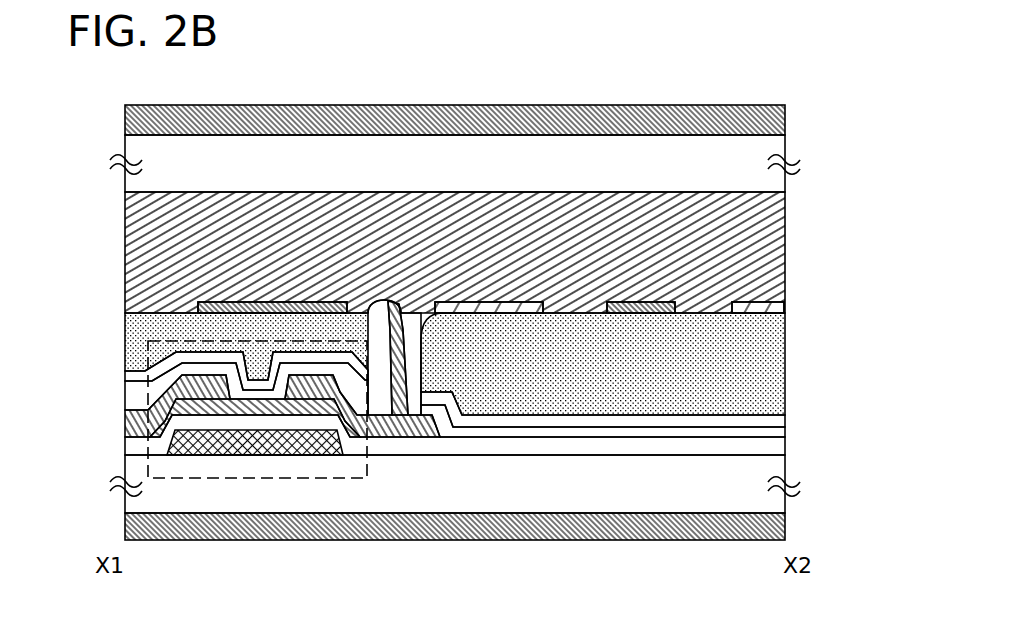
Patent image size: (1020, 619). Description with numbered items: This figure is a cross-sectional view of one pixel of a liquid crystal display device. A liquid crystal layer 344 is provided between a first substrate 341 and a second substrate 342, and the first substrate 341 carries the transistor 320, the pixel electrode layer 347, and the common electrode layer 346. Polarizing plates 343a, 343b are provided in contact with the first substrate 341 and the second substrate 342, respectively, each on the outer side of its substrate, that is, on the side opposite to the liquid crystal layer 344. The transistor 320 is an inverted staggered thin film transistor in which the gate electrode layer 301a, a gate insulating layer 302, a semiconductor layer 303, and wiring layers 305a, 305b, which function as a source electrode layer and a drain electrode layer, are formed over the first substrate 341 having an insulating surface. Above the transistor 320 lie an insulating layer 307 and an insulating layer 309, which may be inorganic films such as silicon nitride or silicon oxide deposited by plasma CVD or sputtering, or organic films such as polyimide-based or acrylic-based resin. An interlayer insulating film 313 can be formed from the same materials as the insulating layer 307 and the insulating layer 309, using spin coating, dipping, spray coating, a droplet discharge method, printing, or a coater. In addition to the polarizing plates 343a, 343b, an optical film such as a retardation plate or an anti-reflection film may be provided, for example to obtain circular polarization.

The gate electrode layer 301a is at (214, 440).
The gate insulating layer 302 is at (545, 445).
The semiconductor layer 303 is at (285, 412).
The wiring layer 305a is at (174, 410).
The wiring layer 305b is at (407, 425).
The insulating layer 307 is at (660, 425).
The insulating layer 309 is at (596, 427).
The interlayer insulating film 313 is at (690, 372).
The transistor 320 is at (256, 343).
The first substrate 341 is at (728, 483).
The second substrate 342 is at (163, 163).
The polarizing plate 343a is at (703, 527).
The polarizing plate 343b is at (320, 128).
The liquid crystal layer 344 is at (393, 255).
The common electrode layer 346 is at (633, 300).
The pixel electrode layer 347 is at (513, 295).